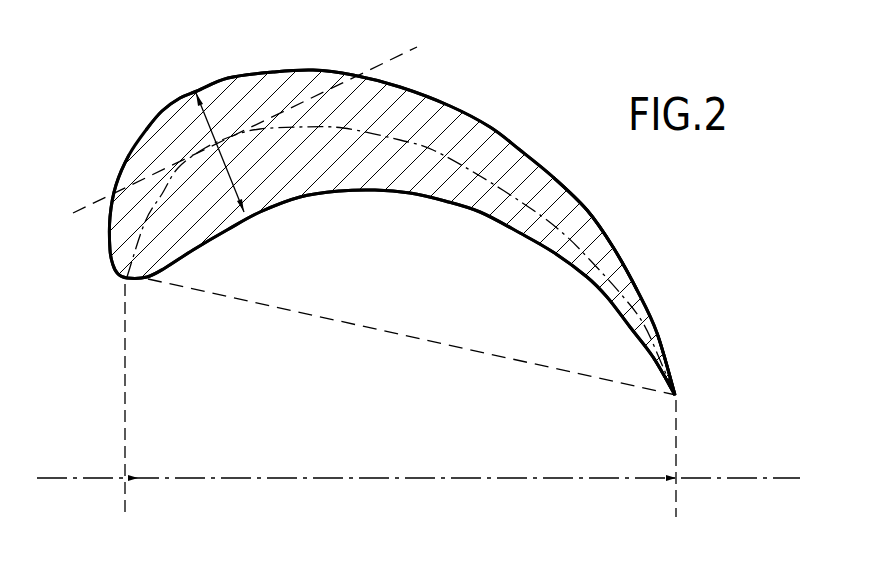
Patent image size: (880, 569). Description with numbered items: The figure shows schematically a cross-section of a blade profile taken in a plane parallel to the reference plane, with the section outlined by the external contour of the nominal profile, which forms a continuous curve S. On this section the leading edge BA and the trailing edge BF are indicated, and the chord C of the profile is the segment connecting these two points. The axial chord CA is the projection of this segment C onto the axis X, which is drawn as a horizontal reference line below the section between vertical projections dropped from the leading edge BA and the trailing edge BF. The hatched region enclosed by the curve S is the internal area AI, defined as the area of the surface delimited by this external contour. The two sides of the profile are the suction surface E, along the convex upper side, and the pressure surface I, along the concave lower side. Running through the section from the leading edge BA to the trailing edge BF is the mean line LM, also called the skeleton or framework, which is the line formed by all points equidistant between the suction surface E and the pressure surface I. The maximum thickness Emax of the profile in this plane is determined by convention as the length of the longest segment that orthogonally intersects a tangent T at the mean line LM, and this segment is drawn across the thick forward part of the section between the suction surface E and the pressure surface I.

The continuous curve S is at (537, 153).
The suction surface E is at (283, 71).
The pressure surface I is at (370, 193).
The internal area AI is at (582, 210).
The leading edge BA is at (124, 280).
The trailing edge BF is at (677, 397).
The mean line LM is at (467, 112).
The tangent T is at (400, 56).
The maximum thickness Emax is at (243, 152).
The chord C is at (382, 332).
The axis X is at (775, 478).
The axial chord CA is at (413, 481).